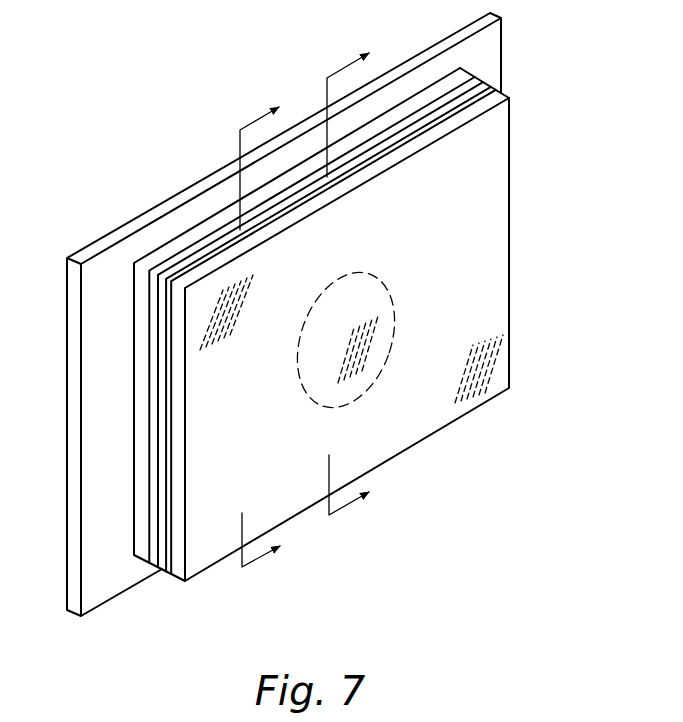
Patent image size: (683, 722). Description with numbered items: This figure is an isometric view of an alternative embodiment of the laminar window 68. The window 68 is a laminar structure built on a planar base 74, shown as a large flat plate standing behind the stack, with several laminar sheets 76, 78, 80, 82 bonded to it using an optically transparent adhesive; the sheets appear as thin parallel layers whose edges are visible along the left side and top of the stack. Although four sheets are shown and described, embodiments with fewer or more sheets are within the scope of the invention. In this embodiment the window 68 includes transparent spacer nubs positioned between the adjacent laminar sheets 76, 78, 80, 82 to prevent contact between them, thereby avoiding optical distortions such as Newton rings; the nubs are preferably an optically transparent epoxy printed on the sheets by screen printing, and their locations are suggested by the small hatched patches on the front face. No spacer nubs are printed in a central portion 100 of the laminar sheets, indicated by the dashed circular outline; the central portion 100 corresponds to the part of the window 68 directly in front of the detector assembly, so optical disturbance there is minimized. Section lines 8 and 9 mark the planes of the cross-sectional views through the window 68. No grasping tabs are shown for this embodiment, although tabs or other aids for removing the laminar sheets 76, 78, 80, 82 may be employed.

The section line 8- 8 is at (255, 353).
The section line 9- 9 is at (348, 293).
The window 68 is at (218, 478).
The planar base 74 is at (501, 35).
The laminar sheet 76 is at (162, 278).
The laminar sheet 78 is at (160, 278).
The laminar sheet 80 is at (172, 275).
The laminar sheet 82 is at (182, 280).
The central portion 100 is at (348, 350).